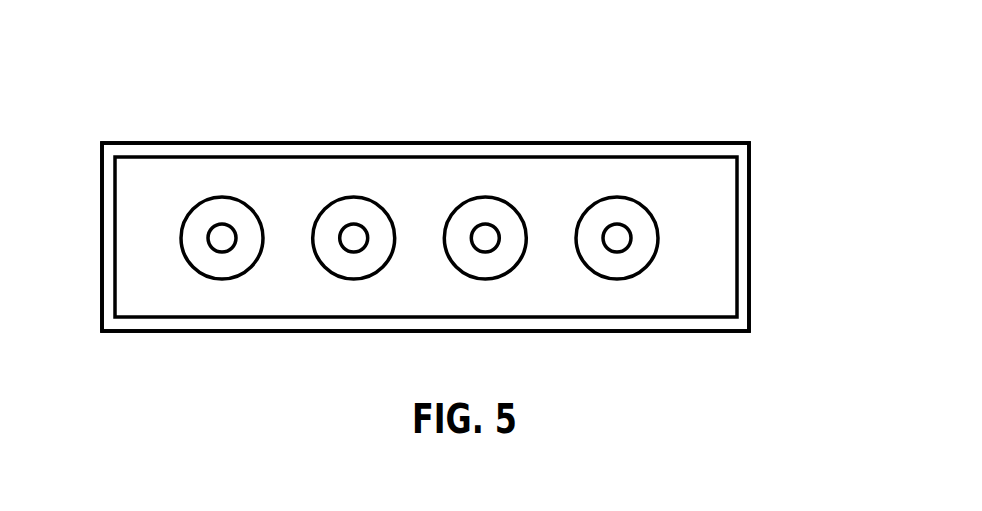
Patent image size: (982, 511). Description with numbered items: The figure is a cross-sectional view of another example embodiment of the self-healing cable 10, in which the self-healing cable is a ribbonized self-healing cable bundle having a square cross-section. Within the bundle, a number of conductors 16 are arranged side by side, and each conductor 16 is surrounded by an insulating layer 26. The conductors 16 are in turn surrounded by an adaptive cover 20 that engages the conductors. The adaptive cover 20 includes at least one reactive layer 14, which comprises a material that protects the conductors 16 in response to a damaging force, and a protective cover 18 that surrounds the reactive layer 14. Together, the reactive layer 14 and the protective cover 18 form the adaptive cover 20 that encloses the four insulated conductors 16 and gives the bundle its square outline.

The self-healing cable 10 is at (168, 103).
The reactive layer 14 is at (695, 213).
The conductor 16 is at (236, 237).
The protective cover 18 is at (749, 172).
The adaptive cover 20 is at (842, 158).
The insulating layer 26 is at (222, 197).